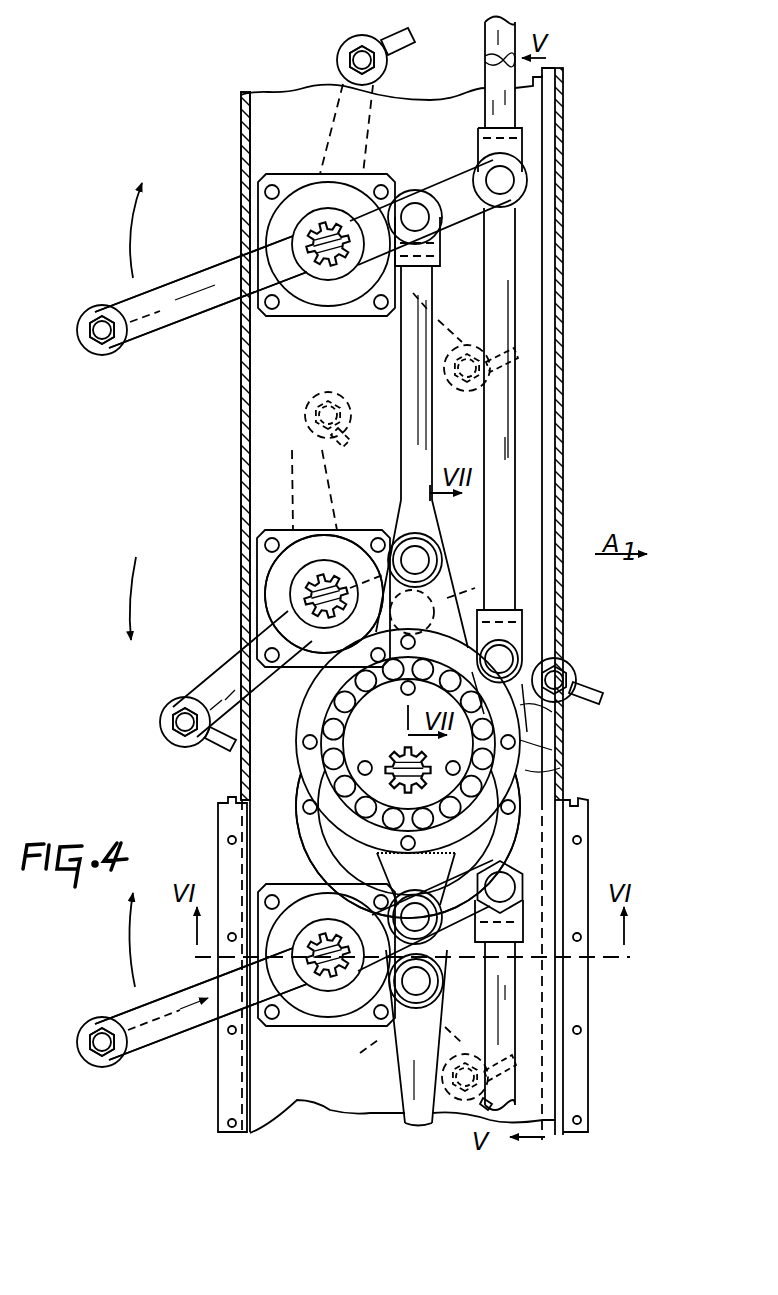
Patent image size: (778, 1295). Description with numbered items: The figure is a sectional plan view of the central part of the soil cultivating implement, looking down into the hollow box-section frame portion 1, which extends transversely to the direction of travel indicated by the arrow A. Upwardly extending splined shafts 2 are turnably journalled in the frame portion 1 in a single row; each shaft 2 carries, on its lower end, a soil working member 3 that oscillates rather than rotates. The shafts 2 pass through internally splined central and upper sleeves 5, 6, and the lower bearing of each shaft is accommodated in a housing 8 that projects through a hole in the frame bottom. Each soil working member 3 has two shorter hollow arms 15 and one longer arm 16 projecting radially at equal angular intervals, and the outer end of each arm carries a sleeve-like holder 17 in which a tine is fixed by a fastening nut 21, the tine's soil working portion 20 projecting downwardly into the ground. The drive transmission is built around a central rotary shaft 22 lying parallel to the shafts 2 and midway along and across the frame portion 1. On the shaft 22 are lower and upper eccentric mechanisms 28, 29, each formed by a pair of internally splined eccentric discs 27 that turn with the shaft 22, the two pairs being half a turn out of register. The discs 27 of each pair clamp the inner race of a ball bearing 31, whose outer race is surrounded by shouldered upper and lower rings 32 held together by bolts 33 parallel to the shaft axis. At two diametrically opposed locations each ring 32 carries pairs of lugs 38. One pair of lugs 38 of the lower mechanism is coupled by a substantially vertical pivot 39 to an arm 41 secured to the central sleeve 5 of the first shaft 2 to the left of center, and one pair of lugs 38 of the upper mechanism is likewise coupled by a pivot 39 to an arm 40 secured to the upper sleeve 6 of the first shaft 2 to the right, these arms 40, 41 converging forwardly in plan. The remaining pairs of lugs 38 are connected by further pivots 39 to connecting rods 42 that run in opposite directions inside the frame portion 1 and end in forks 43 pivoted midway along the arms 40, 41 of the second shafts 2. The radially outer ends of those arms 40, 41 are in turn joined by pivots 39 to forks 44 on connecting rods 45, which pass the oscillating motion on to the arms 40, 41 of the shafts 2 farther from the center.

The hollow box-section frame portion 1 is at (238, 432).
The shaft 2 is at (320, 237).
The soil working member 3 is at (166, 278).
The central sleeve 5 is at (266, 594).
The upper sleeve 6 is at (268, 245).
The housing 8 is at (292, 174).
The arm 15 is at (340, 113).
The arm 16 is at (198, 322).
The sleeve-like holder 17 is at (338, 55).
The soil working portion 20 is at (404, 36).
The fastening nut 21 is at (354, 45).
The shaft 22 is at (400, 752).
The eccentric disc 27 is at (350, 760).
The lower eccentric mechanism 28 is at (300, 832).
The upper eccentric mechanism 29 is at (300, 705).
The ball bearing 31 is at (545, 725).
The ring 32 is at (520, 778).
The bolt 33 is at (308, 742).
The lug 38 is at (440, 556).
The pivot 39 is at (412, 202).
The arm 40 is at (462, 176).
The arm 41 is at (505, 588).
The connecting rod 42 is at (400, 382).
The fork 43 is at (438, 252).
The fork 44 is at (515, 142).
The connecting rod 45 is at (485, 47).